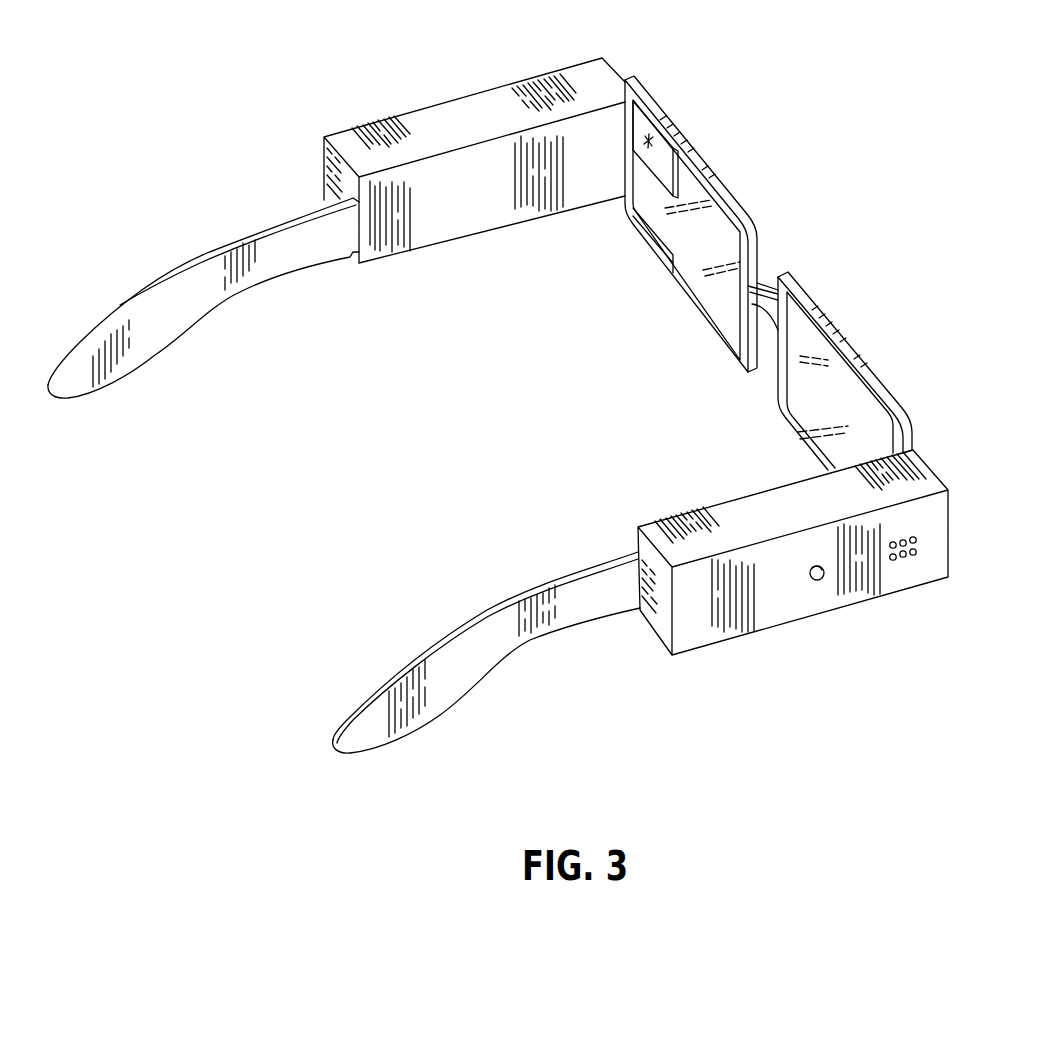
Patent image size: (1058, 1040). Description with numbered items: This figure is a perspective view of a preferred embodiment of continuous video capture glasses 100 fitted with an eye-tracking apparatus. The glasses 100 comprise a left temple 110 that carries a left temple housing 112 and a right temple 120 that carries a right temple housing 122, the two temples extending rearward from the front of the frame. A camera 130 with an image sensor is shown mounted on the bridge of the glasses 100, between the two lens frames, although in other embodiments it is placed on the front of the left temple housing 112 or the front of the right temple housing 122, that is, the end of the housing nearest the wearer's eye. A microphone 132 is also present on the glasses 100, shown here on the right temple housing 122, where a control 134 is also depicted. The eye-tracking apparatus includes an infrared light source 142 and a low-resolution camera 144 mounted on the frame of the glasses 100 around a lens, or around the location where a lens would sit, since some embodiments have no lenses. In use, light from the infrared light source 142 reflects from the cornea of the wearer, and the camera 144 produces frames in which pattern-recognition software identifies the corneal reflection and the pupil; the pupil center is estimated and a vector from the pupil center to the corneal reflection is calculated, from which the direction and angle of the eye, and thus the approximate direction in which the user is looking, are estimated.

The continuous video capture glasses 100 is at (808, 117).
The left temple 110 is at (207, 290).
The left temple housing 112 is at (468, 217).
The right temple 120 is at (538, 580).
The right temple housing 122 is at (745, 515).
The camera 130 is at (771, 283).
The microphone 132 is at (905, 558).
The button 134 is at (827, 575).
The infrared light source 142 is at (637, 240).
The camera 144 is at (640, 117).